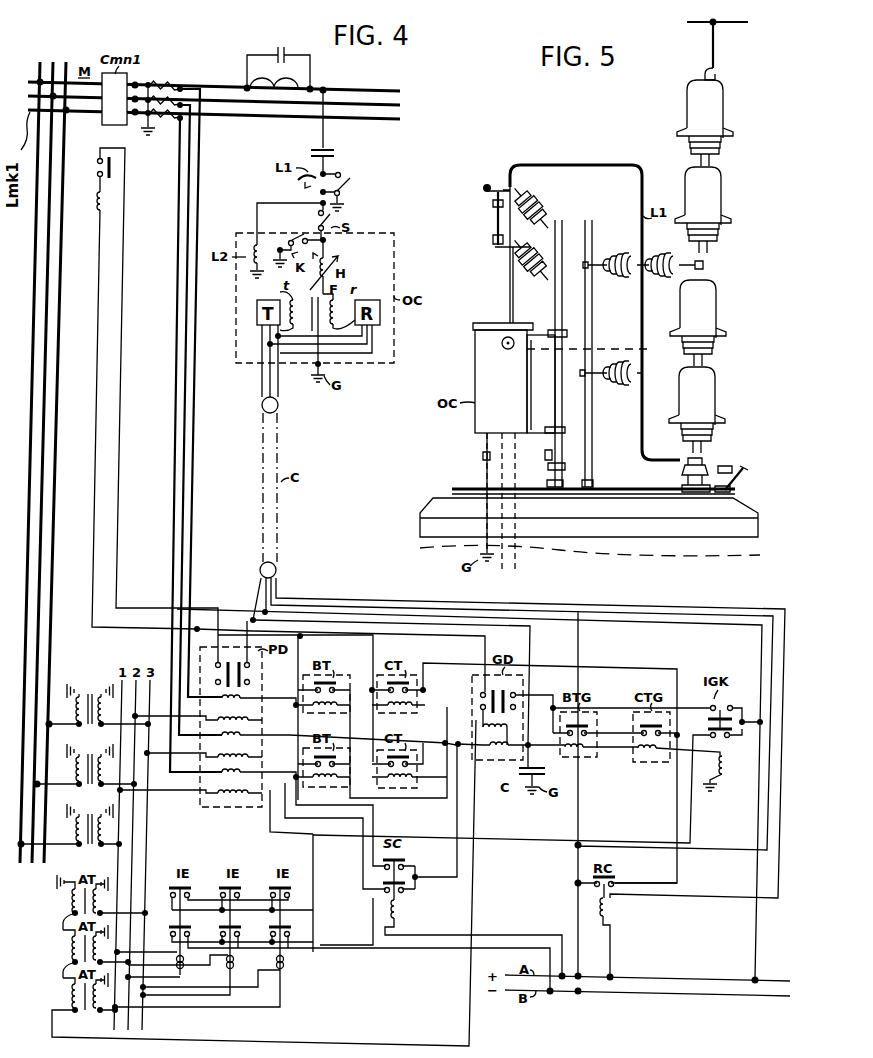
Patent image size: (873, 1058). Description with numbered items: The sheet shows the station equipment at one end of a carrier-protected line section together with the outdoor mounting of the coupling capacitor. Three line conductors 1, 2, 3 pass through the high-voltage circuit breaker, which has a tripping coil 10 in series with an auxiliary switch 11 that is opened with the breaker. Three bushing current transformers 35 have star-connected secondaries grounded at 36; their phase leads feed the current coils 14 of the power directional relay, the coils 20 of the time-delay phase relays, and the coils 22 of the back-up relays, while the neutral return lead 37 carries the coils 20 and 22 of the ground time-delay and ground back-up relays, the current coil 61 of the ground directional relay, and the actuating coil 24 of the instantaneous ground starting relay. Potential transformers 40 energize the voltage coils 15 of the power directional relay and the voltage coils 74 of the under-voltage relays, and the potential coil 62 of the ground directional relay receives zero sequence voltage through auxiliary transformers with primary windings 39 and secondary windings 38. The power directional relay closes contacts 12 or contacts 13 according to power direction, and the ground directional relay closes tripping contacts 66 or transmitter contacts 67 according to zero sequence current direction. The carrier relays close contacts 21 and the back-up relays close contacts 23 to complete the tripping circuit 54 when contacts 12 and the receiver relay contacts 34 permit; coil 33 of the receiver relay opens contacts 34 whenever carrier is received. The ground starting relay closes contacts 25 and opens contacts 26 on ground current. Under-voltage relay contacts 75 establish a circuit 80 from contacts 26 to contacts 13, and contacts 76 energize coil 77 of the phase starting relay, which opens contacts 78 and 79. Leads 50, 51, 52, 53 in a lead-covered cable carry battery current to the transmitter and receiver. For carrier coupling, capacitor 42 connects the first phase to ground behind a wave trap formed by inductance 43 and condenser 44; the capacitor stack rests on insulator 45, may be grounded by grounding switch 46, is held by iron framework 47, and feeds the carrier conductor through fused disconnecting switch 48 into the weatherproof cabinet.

In FIG. 4, the line conductor 1 is at (207, 454).
In FIG. 5, the line conductor 1 is at (736, 26).
In FIG. 4, the line conductor 2 is at (207, 454).
In FIG. 4, the line conductor 3 is at (207, 454).
In FIG. 4, the tripping coil 10 is at (97, 205).
In FIG. 4, the auxiliary switch 11 is at (97, 165).
In FIG. 4, the contacts of power directional relay 12 is at (217, 672).
In FIG. 4, the contacts of power directional relay 13 is at (254, 673).
In FIG. 4, the current coils 14 is at (242, 692).
In FIG. 4, the voltage coils 15 is at (203, 715).
In FIG. 4, the actuating current coil 20 is at (415, 708).
In FIG. 4, the contacts of current tripping relay 21 is at (412, 682).
In FIG. 4, the actuating current coil 22 is at (340, 708).
In FIG. 4, the contacts of back-up relay 23 is at (337, 682).
In FIG. 4, the actuating coil 24 is at (726, 765).
In FIG. 4, the contacts of ground starting relay 25 is at (732, 708).
In FIG. 4, the contacts of ground starting relay 26 is at (728, 740).
In FIG. 4, the actuating coil 33 is at (616, 911).
In FIG. 4, the contacts of receiver relay 34 is at (612, 881).
In FIG. 4, the current transformers 35 is at (168, 86).
In FIG. 4, the ground 36 is at (150, 136).
In FIG. 4, the neutral grounded return lead 37 is at (540, 770).
In FIG. 4, the transformer secondary winding 38 is at (62, 922).
In FIG. 4, the transformer primary winding 39 is at (66, 907).
In FIG. 4, the potential transformers 40 is at (92, 701).
In FIG. 4, the capacitor 42 is at (333, 153).
In FIG. 5, the capacitor 42 is at (735, 203).
In FIG. 4, the inductance 43 is at (277, 84).
In FIG. 4, the condenser 44 is at (276, 51).
In FIG. 4, the insulator 45 is at (351, 185).
In FIG. 5, the insulator 45 is at (680, 481).
In FIG. 5, the grounding switch 46 is at (745, 489).
In FIG. 5, the iron framework 47 is at (573, 425).
In FIG. 5, the fused disconnecting switch 48 is at (475, 221).
In FIG. 4, the lead 50 is at (258, 377).
In FIG. 4, the lead 51 is at (260, 387).
In FIG. 4, the lead 52 is at (282, 380).
In FIG. 4, the lead 53 is at (282, 394).
In FIG. 4, the tripping circuit 54 is at (95, 262).
In FIG. 4, the current coil 61 is at (505, 760).
In FIG. 4, the potential coil 62 is at (477, 734).
In FIG. 4, the tripping contacts 66 is at (479, 695).
In FIG. 4, the transmitter circuit contacts 67 is at (515, 699).
In FIG. 4, the actuating voltage coil 74 is at (189, 961).
In FIG. 4, the contacts of under-voltage relay 75 is at (170, 890).
In FIG. 4, the contacts of under-voltage relay 76 is at (186, 916).
In FIG. 4, the actuating voltage coil 77 is at (401, 914).
In FIG. 4, the contacts of phase starting relay 78 is at (402, 861).
In FIG. 4, the contacts of phase starting relay 79 is at (402, 891).
In FIG. 4, the circuit 80 is at (520, 845).